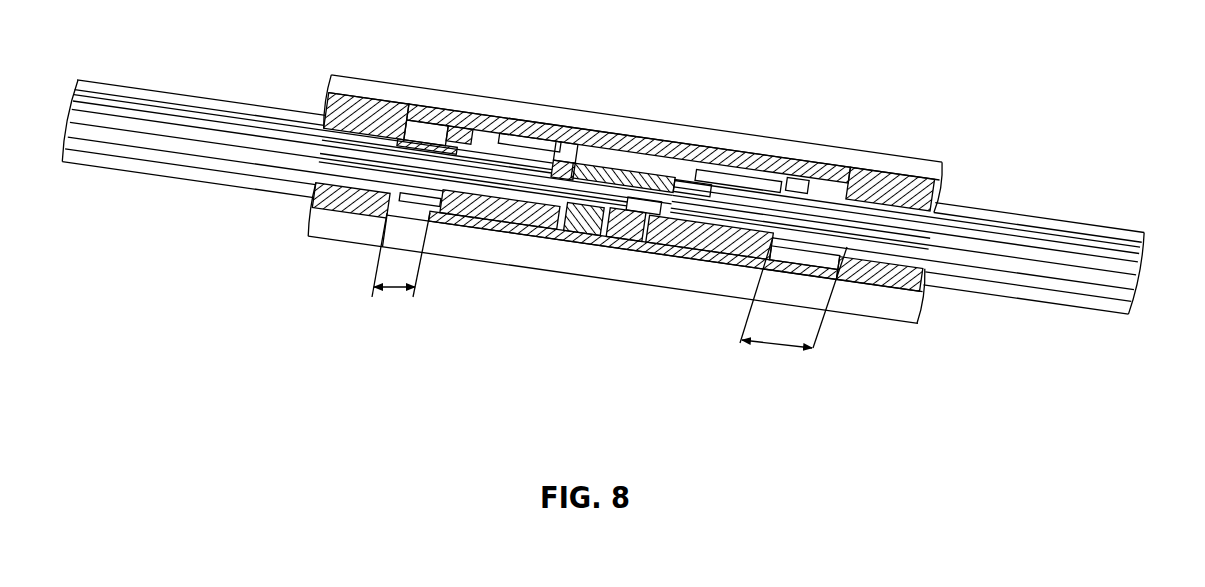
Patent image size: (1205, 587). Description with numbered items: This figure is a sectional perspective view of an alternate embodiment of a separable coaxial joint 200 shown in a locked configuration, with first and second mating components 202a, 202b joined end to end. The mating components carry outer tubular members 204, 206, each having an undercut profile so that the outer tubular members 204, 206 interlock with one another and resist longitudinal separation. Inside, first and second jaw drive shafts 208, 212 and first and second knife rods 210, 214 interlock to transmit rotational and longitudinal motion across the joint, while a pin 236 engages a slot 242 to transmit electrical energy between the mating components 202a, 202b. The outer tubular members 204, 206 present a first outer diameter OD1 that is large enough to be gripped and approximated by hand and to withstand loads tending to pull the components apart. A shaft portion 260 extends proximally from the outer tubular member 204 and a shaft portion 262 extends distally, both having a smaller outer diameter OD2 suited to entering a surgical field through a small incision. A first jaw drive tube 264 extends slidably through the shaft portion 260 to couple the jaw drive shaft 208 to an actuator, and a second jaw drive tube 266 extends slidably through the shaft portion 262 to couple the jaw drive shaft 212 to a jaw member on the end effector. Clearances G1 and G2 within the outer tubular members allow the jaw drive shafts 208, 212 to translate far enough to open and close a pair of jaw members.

The separable coaxial joint 200 is at (845, 53).
The first mating component 202a is at (908, 150).
The second mating component 202b is at (337, 248).
The outer tubular member 204 is at (362, 85).
The outer tubular member 206 is at (647, 128).
The first jaw drive shaft 208 is at (558, 210).
The first knife rod 210 is at (678, 207).
The second jaw drive shaft 212 is at (530, 228).
The second knife rod 214 is at (560, 167).
The pin 236 is at (575, 160).
The slot 242 is at (483, 150).
The shaft portion 260 is at (1080, 178).
The shaft portion 262 is at (118, 88).
The first jaw drive tube 264 is at (1090, 243).
The second jaw drive tube 266 is at (168, 112).
The translation distance G1 is at (783, 347).
The translation distance G2 is at (397, 290).
The first outer diameter OD1 is at (859, 322).
The second outer diameter OD2 is at (1047, 306).